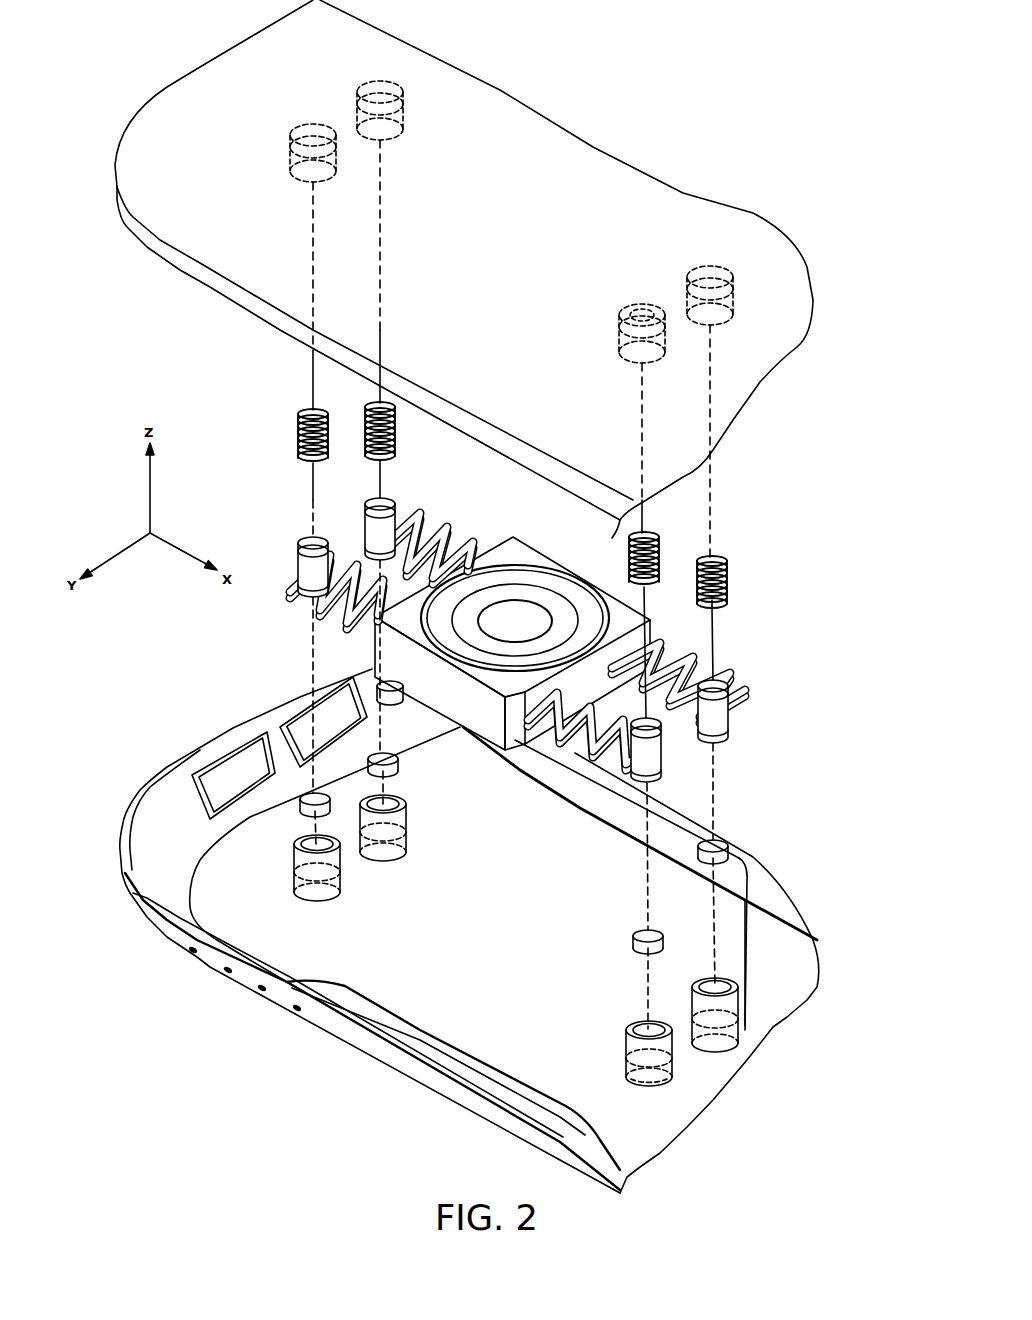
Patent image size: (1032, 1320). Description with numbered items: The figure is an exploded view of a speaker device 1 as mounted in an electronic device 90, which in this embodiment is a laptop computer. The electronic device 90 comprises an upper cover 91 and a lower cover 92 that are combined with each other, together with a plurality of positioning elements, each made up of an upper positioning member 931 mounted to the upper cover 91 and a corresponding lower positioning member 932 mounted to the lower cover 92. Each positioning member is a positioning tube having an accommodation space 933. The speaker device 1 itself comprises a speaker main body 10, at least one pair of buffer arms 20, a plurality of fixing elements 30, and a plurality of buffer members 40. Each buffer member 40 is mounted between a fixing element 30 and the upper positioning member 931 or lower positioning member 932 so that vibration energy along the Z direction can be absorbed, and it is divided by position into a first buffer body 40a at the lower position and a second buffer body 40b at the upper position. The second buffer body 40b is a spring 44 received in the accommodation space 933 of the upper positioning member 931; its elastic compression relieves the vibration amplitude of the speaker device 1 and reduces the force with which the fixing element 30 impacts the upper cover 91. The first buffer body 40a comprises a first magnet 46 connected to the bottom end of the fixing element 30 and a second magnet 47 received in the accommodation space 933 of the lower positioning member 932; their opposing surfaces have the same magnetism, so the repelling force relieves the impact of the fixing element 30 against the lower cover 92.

The speaker device 1 is at (713, 520).
The speaker main body 10 is at (455, 707).
The buffer arms 20 is at (580, 752).
The fixing elements 30 is at (647, 763).
The buffer members 40 is at (803, 623).
The first buffer body 40a is at (813, 940).
The second buffer body 40b is at (743, 607).
The spring 44 is at (727, 580).
The first magnet 46 is at (640, 946).
The second magnet 47 is at (643, 1087).
The electronic device 90 is at (765, 80).
The upper cover 91 is at (573, 165).
The lower cover 92 is at (333, 1030).
The upper positioning member 931 is at (377, 100).
The lower positioning member 932 is at (630, 1047).
The accommodation space 933 is at (622, 356).